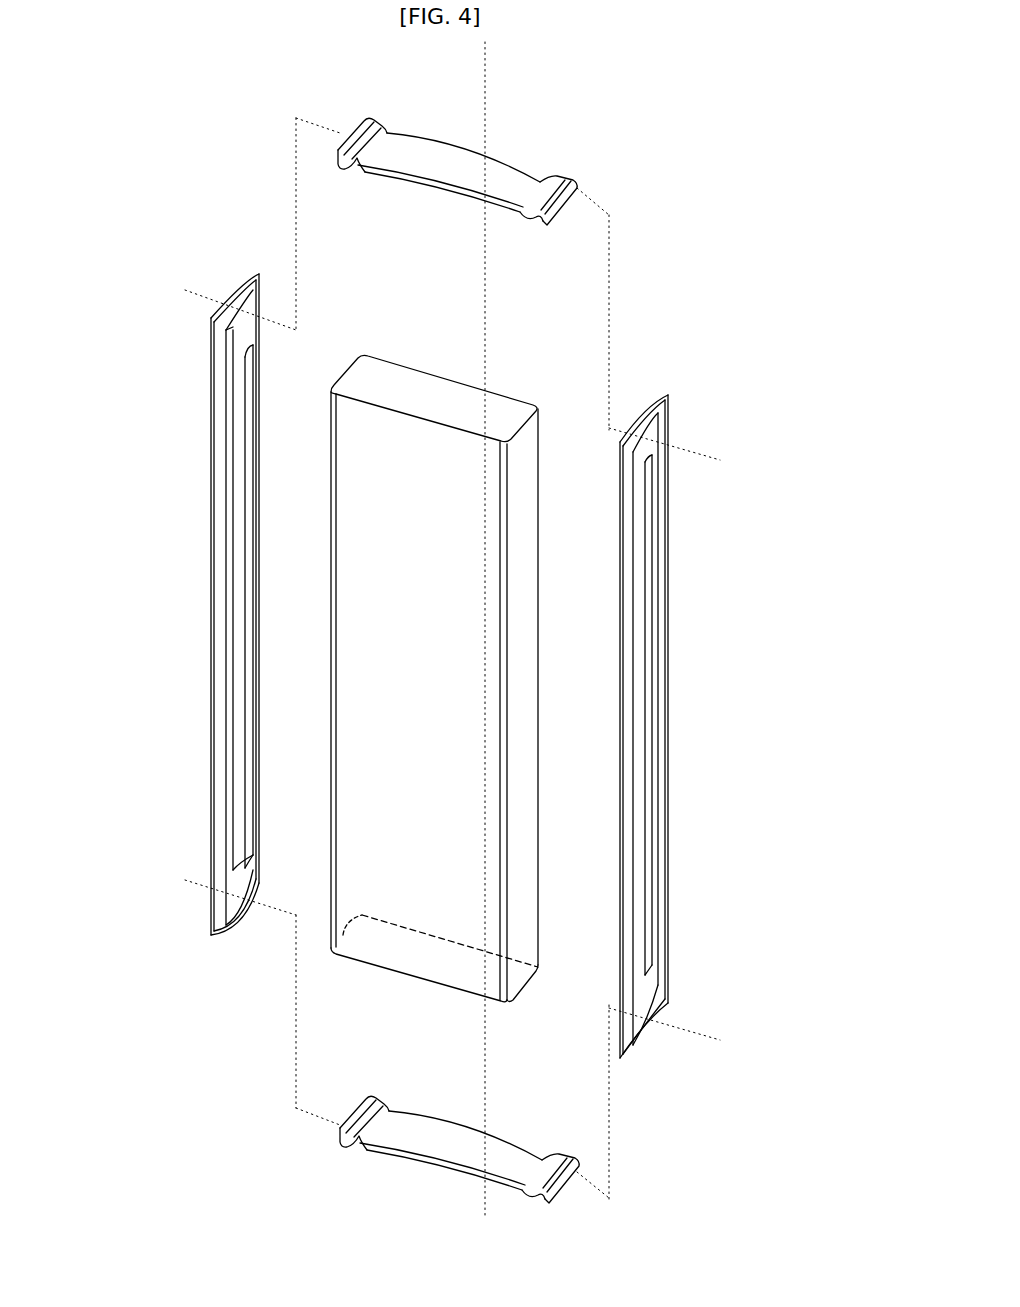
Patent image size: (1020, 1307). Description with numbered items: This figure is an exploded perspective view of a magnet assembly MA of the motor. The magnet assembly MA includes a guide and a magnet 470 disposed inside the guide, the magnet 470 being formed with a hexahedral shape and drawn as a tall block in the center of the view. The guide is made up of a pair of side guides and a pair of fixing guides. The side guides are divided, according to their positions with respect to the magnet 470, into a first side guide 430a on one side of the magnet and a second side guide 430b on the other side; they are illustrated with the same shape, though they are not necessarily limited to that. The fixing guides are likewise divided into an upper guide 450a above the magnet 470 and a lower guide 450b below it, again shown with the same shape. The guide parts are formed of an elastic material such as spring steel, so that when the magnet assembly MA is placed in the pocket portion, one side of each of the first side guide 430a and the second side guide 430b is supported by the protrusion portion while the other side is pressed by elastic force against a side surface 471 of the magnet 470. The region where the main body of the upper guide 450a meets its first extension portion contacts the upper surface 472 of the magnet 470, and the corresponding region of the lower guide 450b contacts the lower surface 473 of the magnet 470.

The magnet assembly MA is at (158, 95).
The upper guide 450a is at (597, 183).
The lower guide 450b is at (308, 1130).
The first side guide 430a is at (184, 546).
The second side guide 430b is at (690, 654).
The magnet 470 is at (478, 362).
The side surface 471 is at (528, 906).
The upper surface 472 is at (373, 377).
The lower surface 473 is at (450, 973).